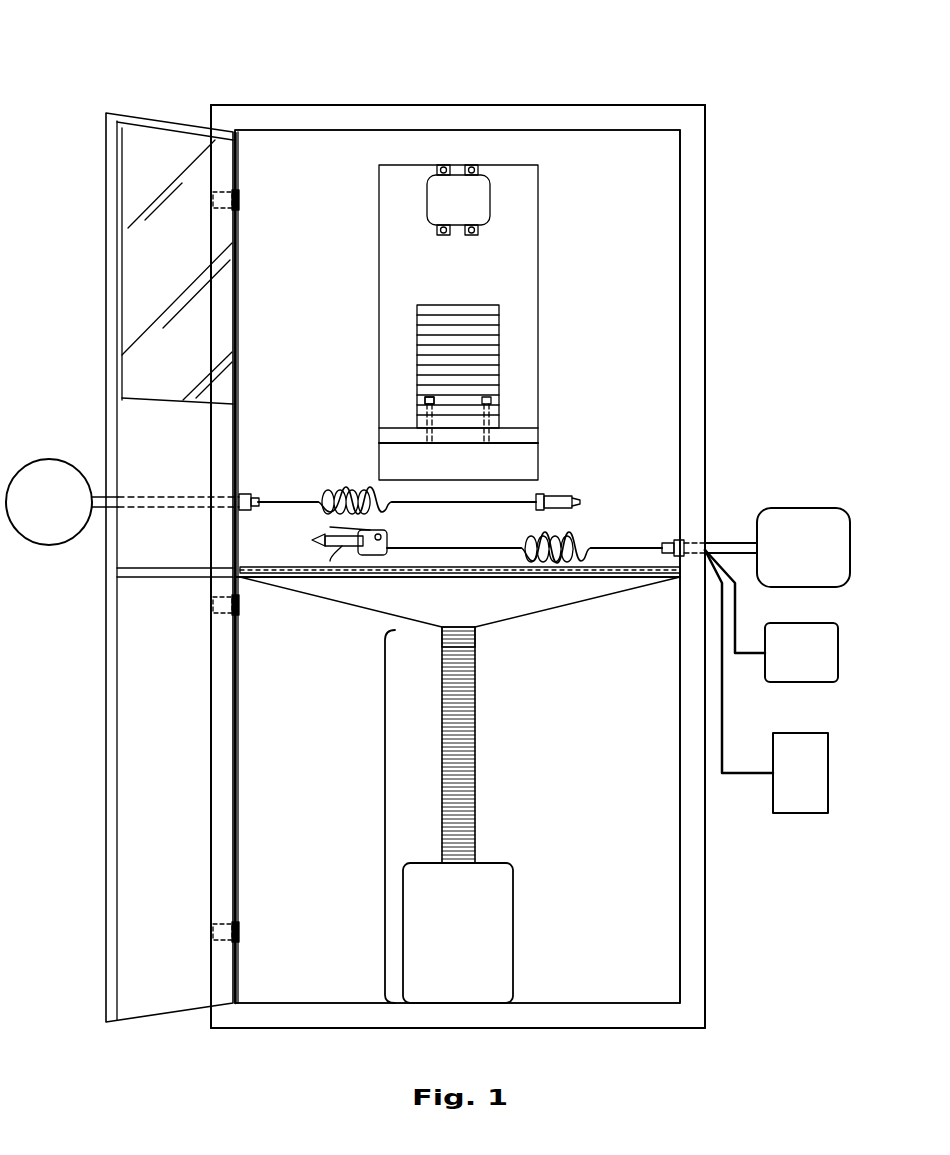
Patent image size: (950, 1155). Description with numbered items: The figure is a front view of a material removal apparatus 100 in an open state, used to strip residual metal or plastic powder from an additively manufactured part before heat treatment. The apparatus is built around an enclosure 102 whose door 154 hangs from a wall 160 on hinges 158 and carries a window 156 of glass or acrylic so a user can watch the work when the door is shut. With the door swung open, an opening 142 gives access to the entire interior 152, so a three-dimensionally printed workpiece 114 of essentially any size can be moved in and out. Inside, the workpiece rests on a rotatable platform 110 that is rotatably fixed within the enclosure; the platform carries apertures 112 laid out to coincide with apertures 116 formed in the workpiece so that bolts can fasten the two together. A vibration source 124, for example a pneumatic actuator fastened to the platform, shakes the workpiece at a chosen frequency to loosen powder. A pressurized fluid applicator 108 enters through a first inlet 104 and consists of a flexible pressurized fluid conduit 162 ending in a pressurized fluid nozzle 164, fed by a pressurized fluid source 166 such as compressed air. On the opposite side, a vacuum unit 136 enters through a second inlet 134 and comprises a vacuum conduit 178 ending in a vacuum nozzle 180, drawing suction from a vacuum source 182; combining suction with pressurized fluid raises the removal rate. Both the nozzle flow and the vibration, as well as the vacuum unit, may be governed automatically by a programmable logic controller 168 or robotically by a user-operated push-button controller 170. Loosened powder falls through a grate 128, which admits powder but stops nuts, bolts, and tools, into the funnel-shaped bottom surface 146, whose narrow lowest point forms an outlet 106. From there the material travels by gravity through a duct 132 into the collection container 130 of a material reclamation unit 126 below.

The material removal apparatus 100 is at (178, 58).
The enclosure 102 is at (705, 413).
The first inlet 104 is at (690, 545).
The outlet 106 is at (455, 625).
The pressurized fluid applicator 108 is at (645, 547).
The rotatable platform 110 is at (527, 428).
The apertures 112 is at (425, 437).
The 3D printed workpiece 114 is at (480, 305).
The apertures 116 is at (425, 412).
The vibration source 124 is at (463, 196).
The material reclamation unit 126 is at (386, 790).
The grate 128 is at (662, 578).
The collection container 130 is at (480, 940).
The duct 132 is at (453, 747).
The second inlet 134 is at (237, 497).
The vacuum unit 136 is at (292, 500).
The opening 142 is at (650, 348).
The bottom surface 146 is at (398, 613).
The interior 152 is at (329, 203).
The door 154 is at (173, 552).
The window 156 is at (173, 382).
The hinges 158 is at (240, 200).
The wall 160 is at (442, 105).
The pressurized fluid conduit 162 is at (417, 548).
The pressurized fluid nozzle 164 is at (340, 540).
The pressurized fluid source 166 is at (821, 562).
The programmable logic controller 168 is at (819, 667).
The push-button controller 170 is at (819, 783).
The vacuum conduit 178 is at (447, 498).
The vacuum nozzle 180 is at (572, 494).
The vacuum source 182 is at (67, 516).